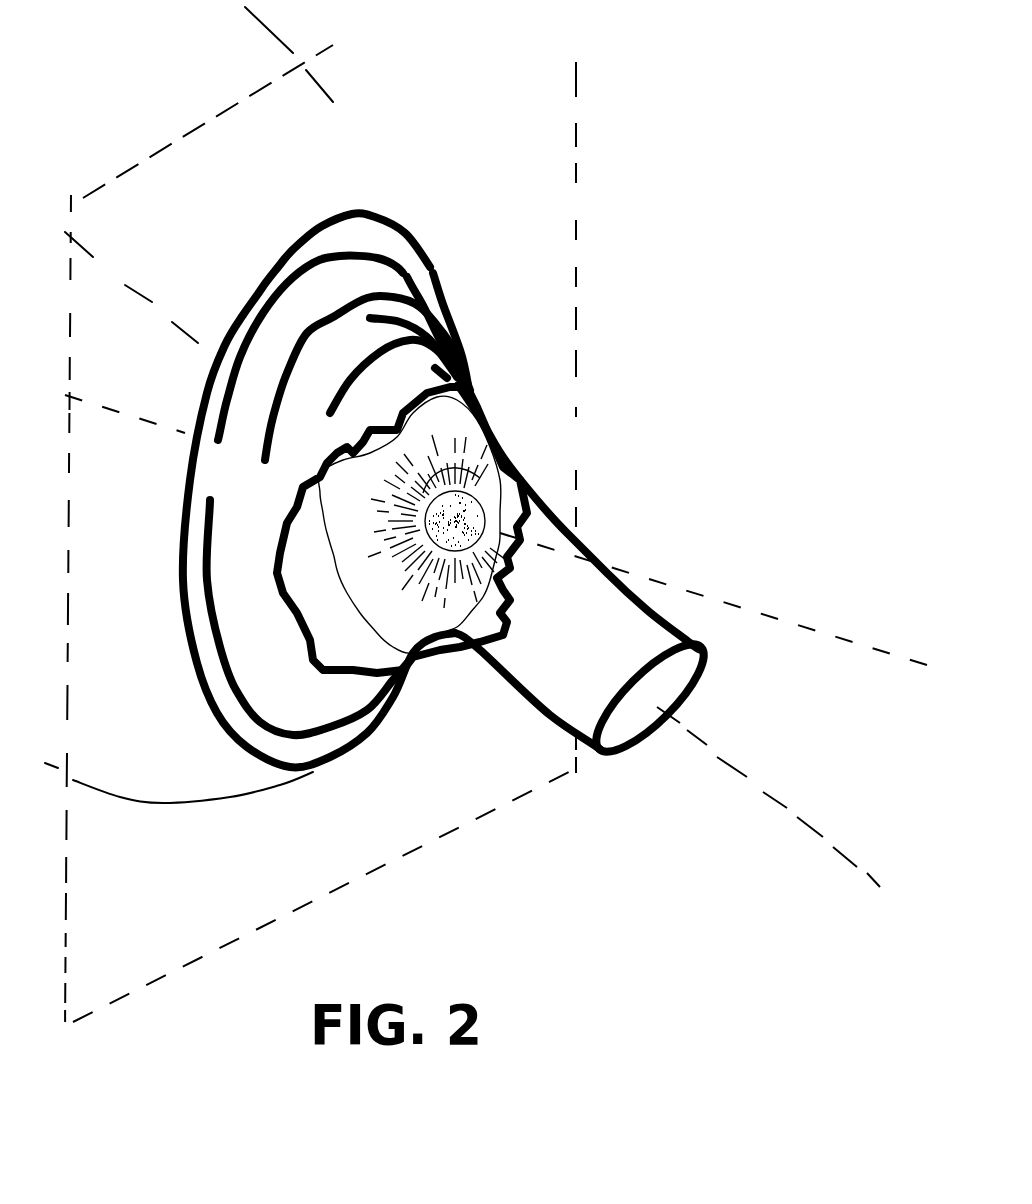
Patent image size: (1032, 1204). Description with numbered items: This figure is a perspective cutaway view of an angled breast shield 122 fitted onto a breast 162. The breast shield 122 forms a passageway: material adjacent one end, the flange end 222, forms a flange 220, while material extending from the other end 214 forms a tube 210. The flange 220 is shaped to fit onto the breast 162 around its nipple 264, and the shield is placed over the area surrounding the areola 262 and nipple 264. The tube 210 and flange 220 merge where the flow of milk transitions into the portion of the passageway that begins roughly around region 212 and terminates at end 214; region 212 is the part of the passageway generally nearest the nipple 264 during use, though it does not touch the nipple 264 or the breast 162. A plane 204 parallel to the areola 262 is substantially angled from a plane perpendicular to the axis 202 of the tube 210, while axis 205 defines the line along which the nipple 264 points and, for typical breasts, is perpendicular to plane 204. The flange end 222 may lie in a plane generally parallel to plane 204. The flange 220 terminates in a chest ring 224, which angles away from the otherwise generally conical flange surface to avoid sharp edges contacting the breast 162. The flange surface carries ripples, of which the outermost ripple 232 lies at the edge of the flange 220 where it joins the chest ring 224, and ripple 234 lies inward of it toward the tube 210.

The breast shield 122 is at (534, 256).
The breast 162 is at (250, 797).
The axis 202 is at (132, 290).
The plane 204 is at (125, 900).
The axis 205 is at (778, 615).
The tube 210 is at (586, 569).
The region 212 is at (497, 423).
The end 214 is at (620, 703).
The flange 220 is at (356, 285).
The flange end 222 is at (213, 713).
The chest ring 224 is at (323, 740).
The outermost ripple 232 is at (283, 280).
The ripple 234 is at (453, 324).
The areola 262 is at (308, 567).
The nipple 264 is at (473, 567).